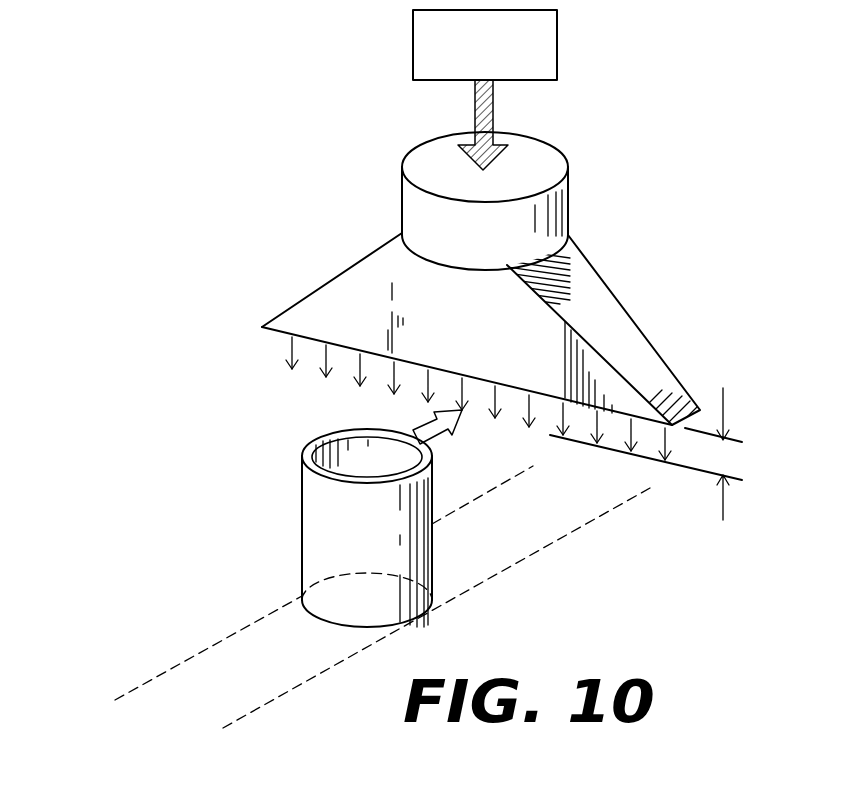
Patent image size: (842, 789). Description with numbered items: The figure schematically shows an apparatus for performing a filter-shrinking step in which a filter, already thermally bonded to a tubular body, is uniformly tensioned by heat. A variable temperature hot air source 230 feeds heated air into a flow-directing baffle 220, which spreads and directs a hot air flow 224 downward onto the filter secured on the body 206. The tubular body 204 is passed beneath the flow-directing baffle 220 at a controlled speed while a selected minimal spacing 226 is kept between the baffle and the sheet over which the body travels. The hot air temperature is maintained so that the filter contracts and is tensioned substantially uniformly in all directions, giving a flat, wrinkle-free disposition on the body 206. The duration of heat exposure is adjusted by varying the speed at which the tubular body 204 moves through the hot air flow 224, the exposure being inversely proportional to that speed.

The tubular body 204 is at (327, 537).
The body 206 is at (310, 440).
The flow-directing baffle 220 is at (483, 284).
The hot air flow 224 is at (280, 352).
The minimal spacing 226 is at (646, 441).
The variable temperature hot air source 230 is at (557, 47).